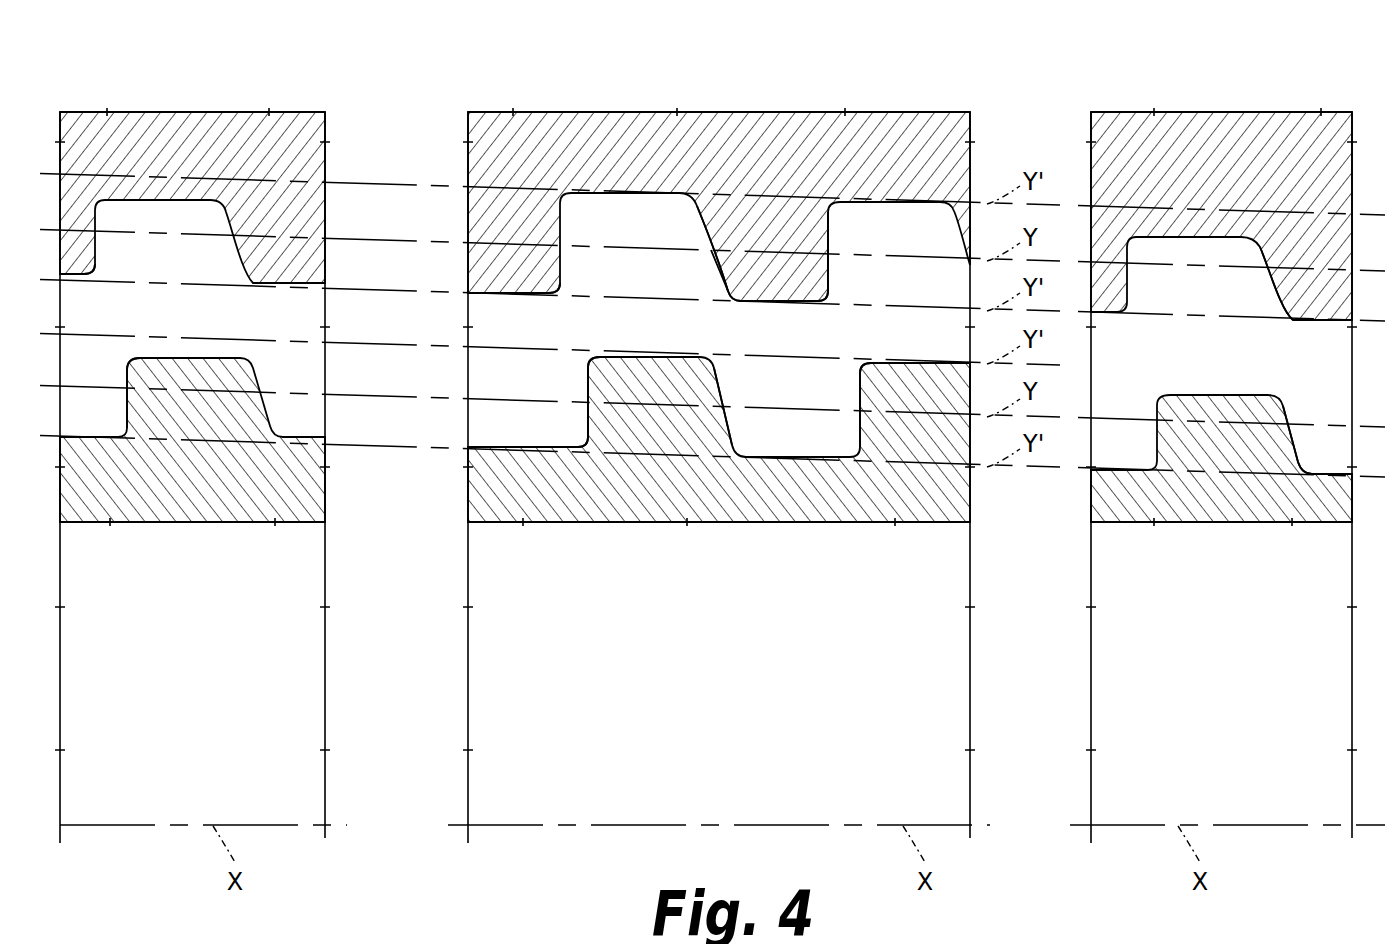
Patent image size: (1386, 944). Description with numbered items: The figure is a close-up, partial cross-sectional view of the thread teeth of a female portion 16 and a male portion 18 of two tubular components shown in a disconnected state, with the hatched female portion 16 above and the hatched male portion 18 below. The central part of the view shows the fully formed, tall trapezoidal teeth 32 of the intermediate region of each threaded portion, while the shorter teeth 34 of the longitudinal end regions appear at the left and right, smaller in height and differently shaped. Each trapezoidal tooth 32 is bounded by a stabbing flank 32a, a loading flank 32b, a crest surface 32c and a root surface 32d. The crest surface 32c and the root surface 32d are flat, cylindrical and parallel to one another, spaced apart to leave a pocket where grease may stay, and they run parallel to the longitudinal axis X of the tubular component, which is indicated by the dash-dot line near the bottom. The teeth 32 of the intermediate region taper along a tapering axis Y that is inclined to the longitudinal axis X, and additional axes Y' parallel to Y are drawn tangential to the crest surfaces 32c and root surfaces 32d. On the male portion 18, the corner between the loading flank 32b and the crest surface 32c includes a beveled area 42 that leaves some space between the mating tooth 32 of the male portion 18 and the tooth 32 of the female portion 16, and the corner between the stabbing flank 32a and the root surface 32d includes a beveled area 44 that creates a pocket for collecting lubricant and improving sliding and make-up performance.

The female portion 16 is at (1243, 85).
The male portion 18 is at (1200, 562).
The teeth 32 is at (437, 293).
The stabbing flank 32a is at (724, 398).
The loading flank 32b is at (588, 416).
The crest surface 32c is at (781, 303).
The root surface 32d is at (770, 457).
The shorter teeth 34 is at (70, 290).
The beveled area 42 is at (590, 351).
The beveled area 44 is at (699, 278).